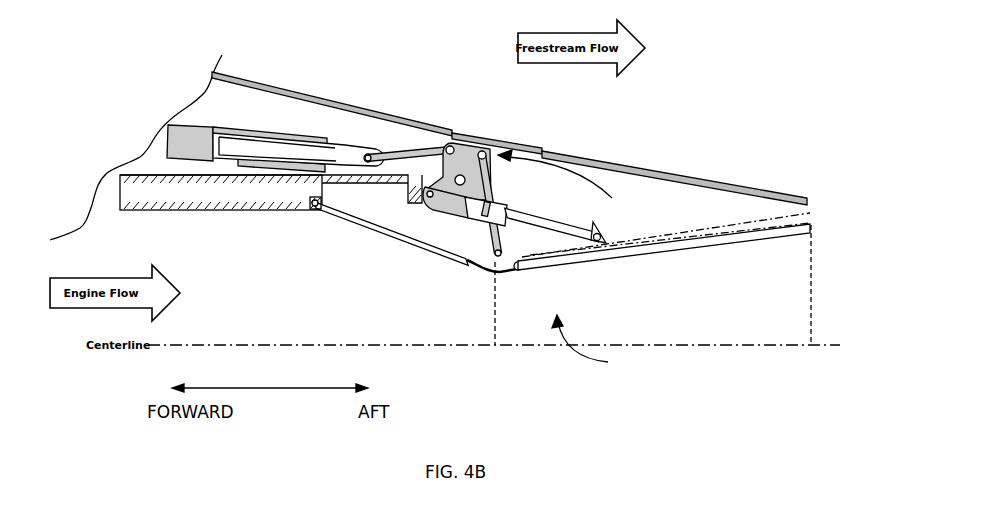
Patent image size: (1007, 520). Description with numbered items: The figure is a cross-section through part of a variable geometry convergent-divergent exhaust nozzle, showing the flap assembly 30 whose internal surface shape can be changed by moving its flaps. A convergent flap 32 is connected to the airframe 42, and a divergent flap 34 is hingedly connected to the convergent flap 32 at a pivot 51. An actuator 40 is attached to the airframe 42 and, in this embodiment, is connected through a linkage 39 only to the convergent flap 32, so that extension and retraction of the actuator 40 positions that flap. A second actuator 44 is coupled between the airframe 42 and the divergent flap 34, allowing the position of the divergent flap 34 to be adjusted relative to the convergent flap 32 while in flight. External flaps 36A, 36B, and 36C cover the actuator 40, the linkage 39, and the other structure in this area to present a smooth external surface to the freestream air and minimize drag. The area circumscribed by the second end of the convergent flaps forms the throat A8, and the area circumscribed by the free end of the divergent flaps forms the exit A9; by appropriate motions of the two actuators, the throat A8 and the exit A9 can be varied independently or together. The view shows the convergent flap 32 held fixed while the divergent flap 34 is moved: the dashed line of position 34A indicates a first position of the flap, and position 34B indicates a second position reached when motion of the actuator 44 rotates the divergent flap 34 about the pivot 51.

The flap assembly 30 is at (592, 342).
The convergent flap 32 is at (408, 245).
The divergent flap 34 is at (623, 258).
The first position 34A is at (810, 213).
The second position 34B is at (812, 228).
The external flap 36A is at (387, 108).
The external flap 36B is at (507, 137).
The external flap 36C is at (628, 163).
The linkage 39 is at (567, 181).
The actuator 40 is at (235, 130).
The airframe 42 is at (163, 188).
The second actuator 44 is at (510, 200).
The pivot 51 is at (519, 270).
The throat A8 is at (510, 303).
The exit A9 is at (824, 285).